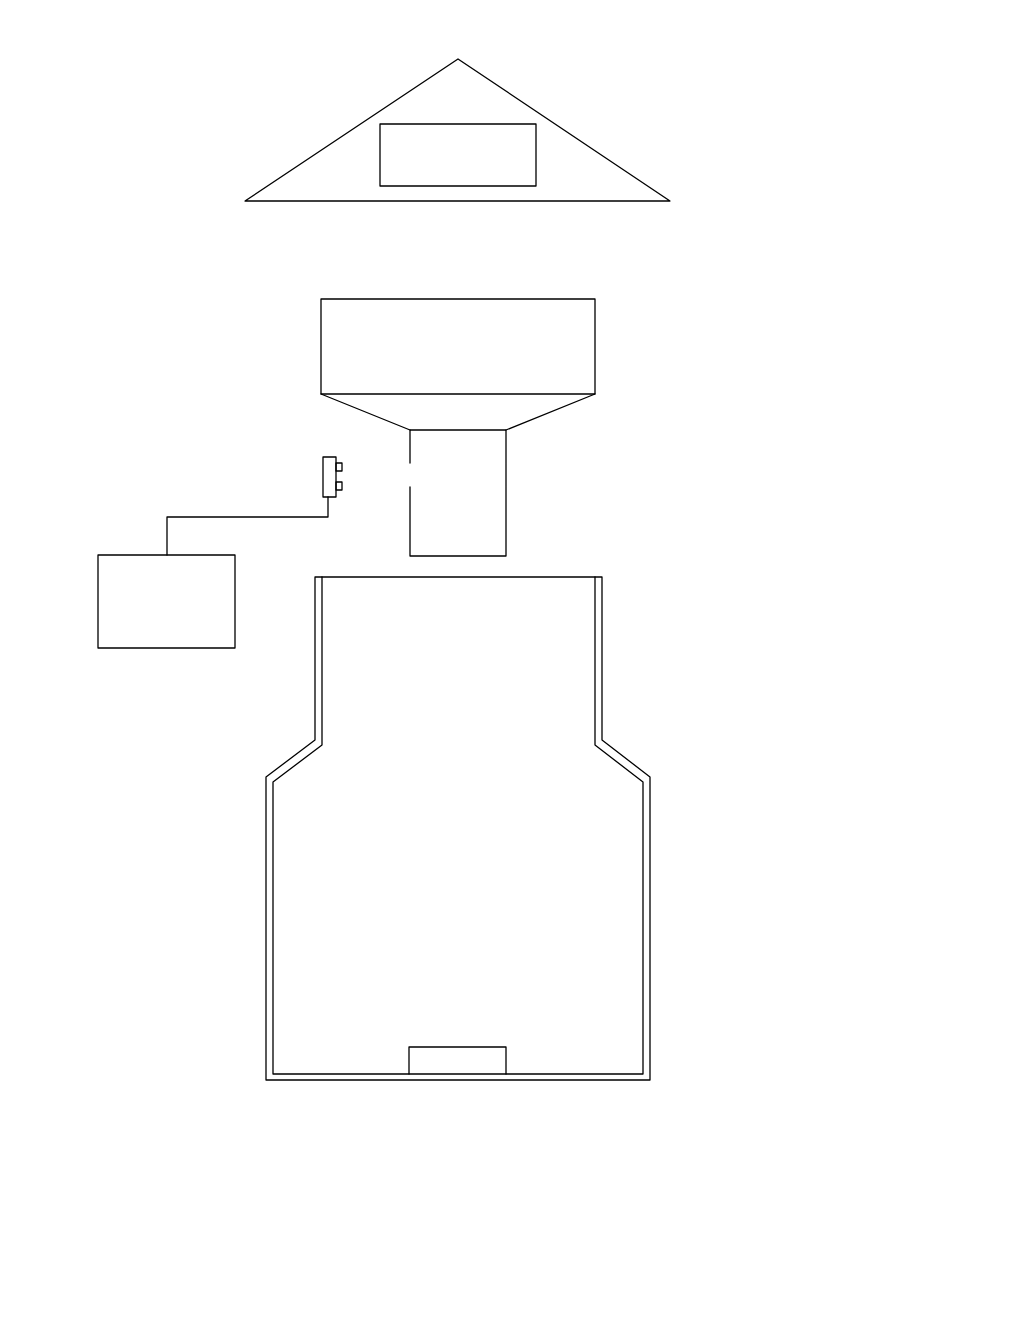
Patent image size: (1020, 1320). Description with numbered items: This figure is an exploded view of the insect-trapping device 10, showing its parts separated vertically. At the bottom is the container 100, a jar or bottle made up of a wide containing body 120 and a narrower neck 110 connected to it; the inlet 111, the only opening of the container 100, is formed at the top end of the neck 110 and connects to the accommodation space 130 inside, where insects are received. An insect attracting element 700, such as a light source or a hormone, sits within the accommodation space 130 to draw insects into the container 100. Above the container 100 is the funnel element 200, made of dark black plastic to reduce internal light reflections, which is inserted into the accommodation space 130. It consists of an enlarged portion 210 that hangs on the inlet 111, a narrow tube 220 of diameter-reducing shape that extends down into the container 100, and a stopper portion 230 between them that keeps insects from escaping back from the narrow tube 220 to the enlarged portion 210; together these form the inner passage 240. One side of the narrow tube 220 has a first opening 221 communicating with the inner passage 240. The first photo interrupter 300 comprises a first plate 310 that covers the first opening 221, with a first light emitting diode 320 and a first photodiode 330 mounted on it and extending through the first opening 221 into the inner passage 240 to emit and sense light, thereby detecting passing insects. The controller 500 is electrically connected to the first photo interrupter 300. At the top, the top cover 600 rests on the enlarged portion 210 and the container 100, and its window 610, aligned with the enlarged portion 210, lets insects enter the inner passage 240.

The insect-trapping device 10 is at (117, 13).
The container 100 is at (722, 738).
The neck 110 is at (600, 725).
The inlet 111 is at (597, 577).
The containing body 120 is at (653, 847).
The accommodation space 130 is at (613, 905).
The funnel element 200 is at (708, 392).
The enlarged portion 210 is at (583, 365).
The narrow tube 220 is at (483, 469).
The first opening 221 is at (408, 477).
The stopper portion 230 is at (482, 430).
The inner passage 240 is at (484, 557).
The first photo interrupter 300 is at (148, 377).
The first plate 310 is at (335, 475).
The first light emitting diode 320 is at (335, 467).
The first photodiode 330 is at (335, 487).
The controller 500 is at (167, 648).
The top cover 600 is at (477, 99).
The window 610 is at (532, 128).
The insect attracting element 700 is at (484, 1058).